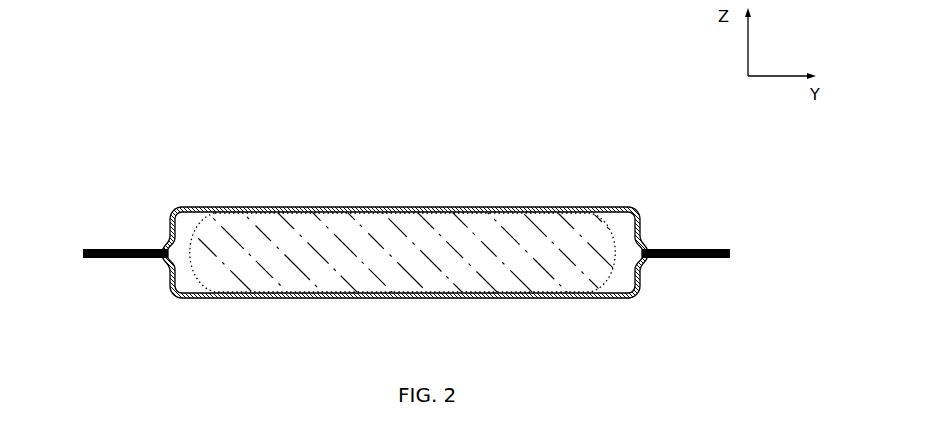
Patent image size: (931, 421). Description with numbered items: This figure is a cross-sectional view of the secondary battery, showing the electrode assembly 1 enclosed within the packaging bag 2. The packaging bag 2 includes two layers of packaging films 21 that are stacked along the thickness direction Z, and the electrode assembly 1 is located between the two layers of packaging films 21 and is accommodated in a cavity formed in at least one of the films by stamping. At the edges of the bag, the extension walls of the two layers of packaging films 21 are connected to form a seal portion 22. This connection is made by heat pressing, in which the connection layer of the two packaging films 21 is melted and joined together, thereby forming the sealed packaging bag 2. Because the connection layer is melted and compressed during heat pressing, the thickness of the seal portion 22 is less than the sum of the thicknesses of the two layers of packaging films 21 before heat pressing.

The electrode assembly 1 is at (338, 222).
The packaging bag 2 is at (387, 250).
The packaging film 21 is at (212, 208).
The seal portion 22 is at (118, 249).